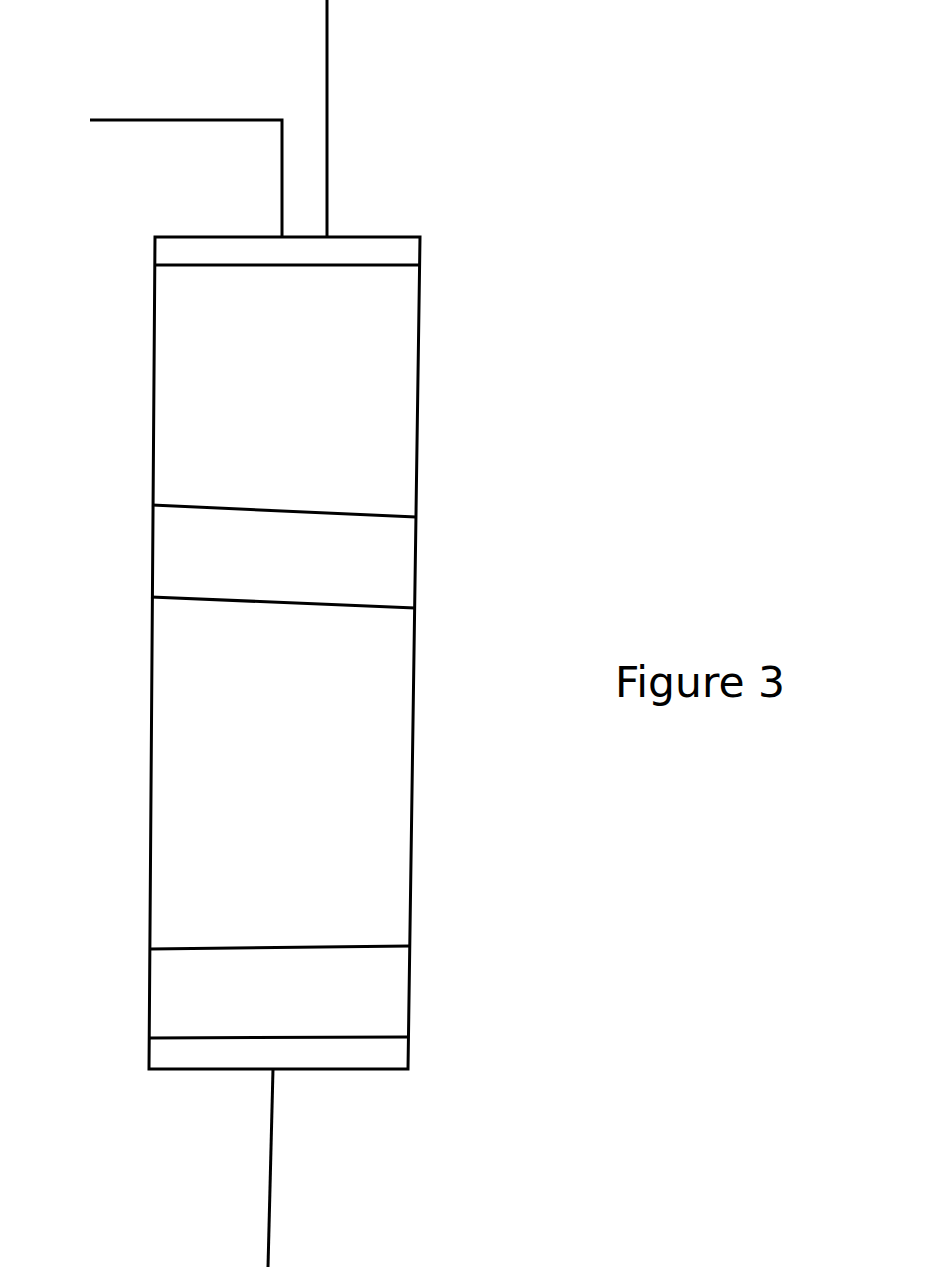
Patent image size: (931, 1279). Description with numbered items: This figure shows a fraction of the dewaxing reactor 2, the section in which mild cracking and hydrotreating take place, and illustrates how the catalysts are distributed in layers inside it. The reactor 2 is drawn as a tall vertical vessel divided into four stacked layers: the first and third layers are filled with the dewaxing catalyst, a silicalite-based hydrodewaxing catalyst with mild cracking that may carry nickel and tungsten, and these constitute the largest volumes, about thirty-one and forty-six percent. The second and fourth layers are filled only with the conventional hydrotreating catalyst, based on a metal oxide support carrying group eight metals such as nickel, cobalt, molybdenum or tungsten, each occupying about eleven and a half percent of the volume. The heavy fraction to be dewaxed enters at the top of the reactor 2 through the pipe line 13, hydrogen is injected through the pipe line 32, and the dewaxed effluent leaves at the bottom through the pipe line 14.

The dewaxing reactor 2 is at (420, 652).
The pipe line 13 is at (187, 119).
The pipe line 14 is at (283, 1160).
The pipe line 32 is at (328, 100).